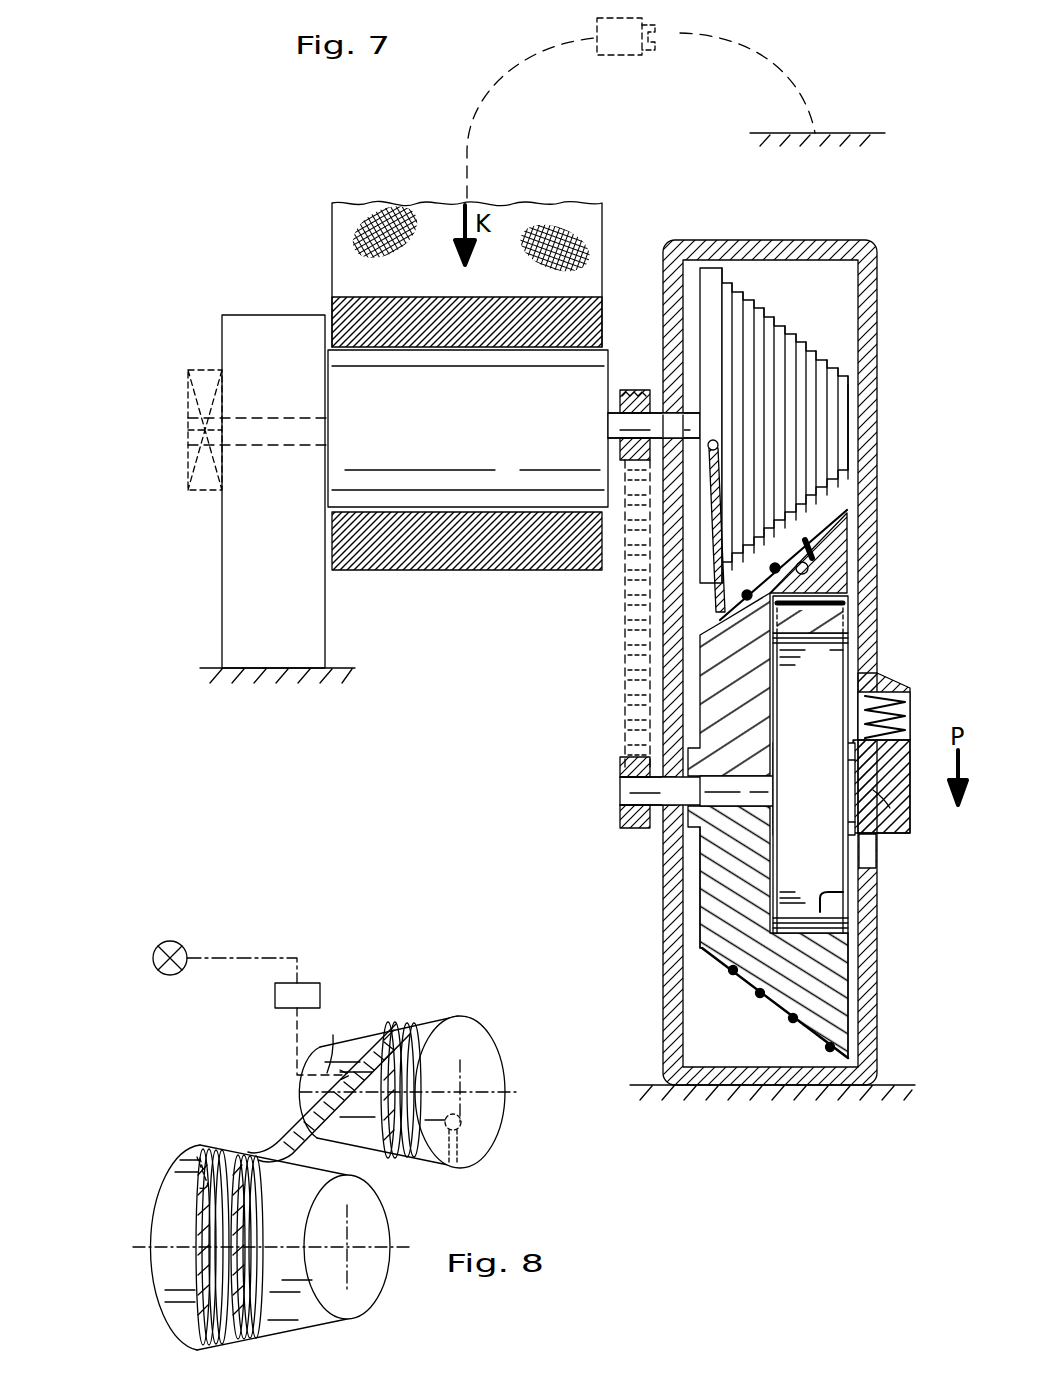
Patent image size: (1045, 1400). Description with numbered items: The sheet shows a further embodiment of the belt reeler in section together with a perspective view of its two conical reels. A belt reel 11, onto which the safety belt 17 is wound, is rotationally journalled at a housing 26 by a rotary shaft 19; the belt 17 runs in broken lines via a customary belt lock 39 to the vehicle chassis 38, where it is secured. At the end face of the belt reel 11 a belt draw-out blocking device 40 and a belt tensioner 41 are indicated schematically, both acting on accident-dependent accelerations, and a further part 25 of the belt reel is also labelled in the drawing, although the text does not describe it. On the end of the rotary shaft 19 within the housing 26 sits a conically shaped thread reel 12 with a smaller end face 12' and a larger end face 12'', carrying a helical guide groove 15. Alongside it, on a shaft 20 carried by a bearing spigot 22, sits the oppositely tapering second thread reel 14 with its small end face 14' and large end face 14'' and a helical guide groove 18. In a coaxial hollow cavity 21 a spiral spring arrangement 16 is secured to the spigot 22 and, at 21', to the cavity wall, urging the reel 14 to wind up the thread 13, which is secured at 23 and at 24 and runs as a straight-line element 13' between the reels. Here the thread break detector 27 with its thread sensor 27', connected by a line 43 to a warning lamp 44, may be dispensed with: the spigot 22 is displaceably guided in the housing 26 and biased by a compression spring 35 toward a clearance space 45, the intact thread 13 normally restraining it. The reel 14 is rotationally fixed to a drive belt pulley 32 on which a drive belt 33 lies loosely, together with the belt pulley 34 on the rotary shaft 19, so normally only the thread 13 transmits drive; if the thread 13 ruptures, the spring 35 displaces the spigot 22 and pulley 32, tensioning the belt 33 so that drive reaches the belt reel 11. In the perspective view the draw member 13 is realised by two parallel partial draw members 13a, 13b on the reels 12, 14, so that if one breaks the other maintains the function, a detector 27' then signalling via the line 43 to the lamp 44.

In FIG. 7, the belt reel 11 is at (470, 425).
In FIG. 7, the thread reel 12 is at (829, 425).
In FIG. 8, the thread reel 12 is at (417, 1087).
In FIG. 7, the smaller end face 12' is at (895, 415).
In FIG. 7, the larger end face 12'' is at (667, 398).
In FIG. 7, the thread 13 is at (813, 737).
In FIG. 8, the thread 13 is at (247, 1094).
In FIG. 7, the straight-line element 13' is at (834, 565).
In FIG. 8, the straight-line element 13' is at (297, 1093).
In FIG. 8, the partial draw member 13a is at (318, 1108).
In FIG. 8, the partial draw member 13b is at (332, 1165).
In FIG. 7, the thread reel 14 is at (730, 785).
In FIG. 8, the thread reel 14 is at (250, 1247).
In FIG. 7, the small end face 14' is at (644, 887).
In FIG. 7, the large end face 14'' is at (907, 995).
In FIG. 7, the helical guide groove 15 is at (752, 312).
In FIG. 7, the spiral spring arrangement 16 is at (822, 905).
In FIG. 7, the safety belt 17 is at (488, 105).
In FIG. 7, the helical guide groove 18 is at (815, 548).
In FIG. 7, the rotary shaft 19 is at (672, 400).
In FIG. 7, the shaft 20 is at (745, 797).
In FIG. 7, the hollow cavity 21 is at (878, 921).
In FIG. 7, the spring attachment point 21' is at (861, 613).
In FIG. 7, the bearing spigot 22 is at (905, 822).
In FIG. 7, the thread securing point 23 is at (810, 565).
In FIG. 8, the thread securing point 23 is at (188, 1170).
In FIG. 7, the thread securing point 24 is at (612, 455).
In FIG. 8, the thread securing point 24 is at (460, 1128).
In FIG. 7, the motor winding 25 is at (412, 548).
In FIG. 7, the housing 26 is at (718, 240).
In FIG. 8, the thread break detector 27 is at (325, 1011).
In FIG. 8, the thread sensor 27' is at (354, 1033).
In FIG. 7, the drive belt pulley 32 is at (622, 800).
In FIG. 7, the drive belt 33 is at (628, 722).
In FIG. 7, the belt pulley 34 is at (614, 405).
In FIG. 7, the compression spring 35 is at (905, 712).
In FIG. 7, the vehicle chassis 38 is at (868, 152).
In FIG. 7, the belt lock 39 is at (630, 66).
In FIG. 7, the belt draw-out blocking device 40 is at (272, 335).
In FIG. 7, the belt tensioner 41 is at (206, 372).
In FIG. 8, the line 43 is at (240, 955).
In FIG. 8, the warning lamp 44 is at (166, 976).
In FIG. 7, the clearance space 45 is at (868, 850).